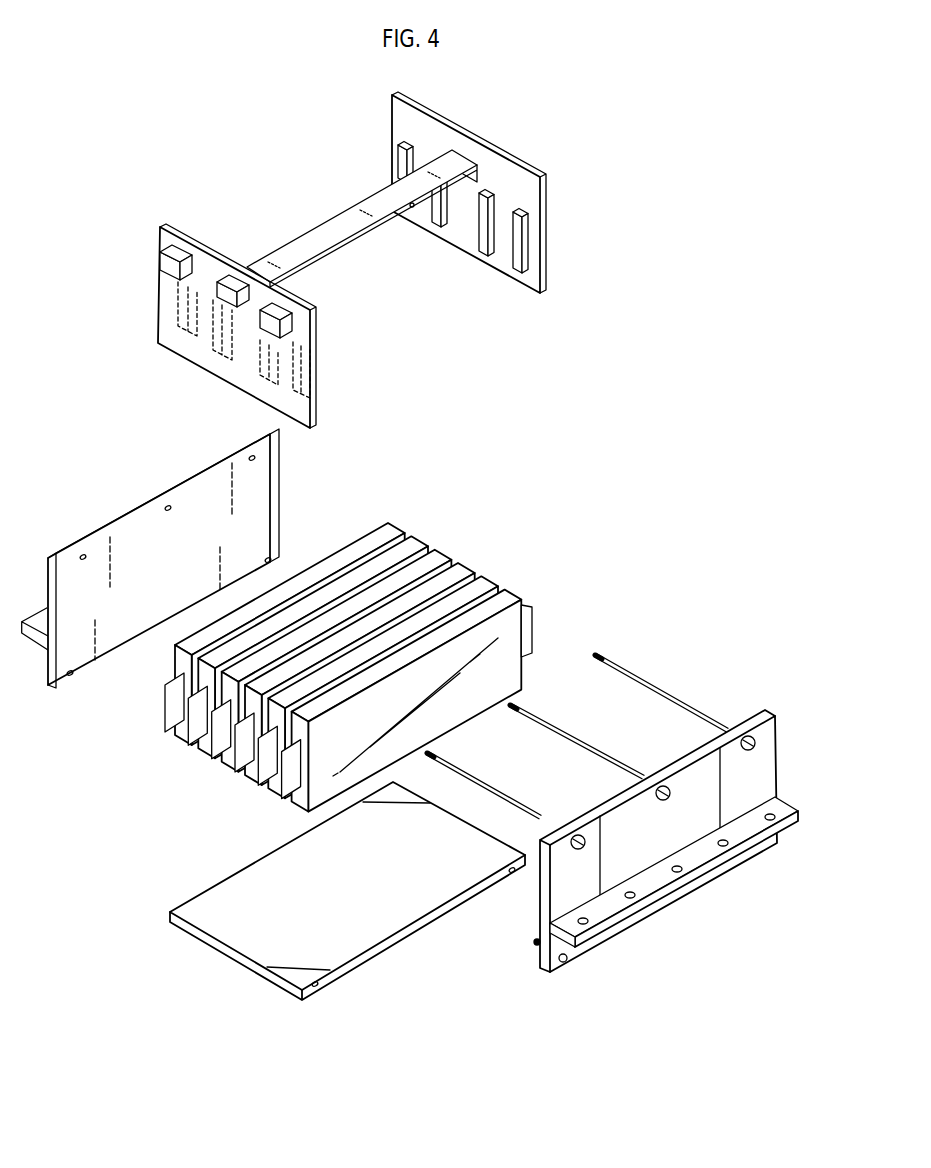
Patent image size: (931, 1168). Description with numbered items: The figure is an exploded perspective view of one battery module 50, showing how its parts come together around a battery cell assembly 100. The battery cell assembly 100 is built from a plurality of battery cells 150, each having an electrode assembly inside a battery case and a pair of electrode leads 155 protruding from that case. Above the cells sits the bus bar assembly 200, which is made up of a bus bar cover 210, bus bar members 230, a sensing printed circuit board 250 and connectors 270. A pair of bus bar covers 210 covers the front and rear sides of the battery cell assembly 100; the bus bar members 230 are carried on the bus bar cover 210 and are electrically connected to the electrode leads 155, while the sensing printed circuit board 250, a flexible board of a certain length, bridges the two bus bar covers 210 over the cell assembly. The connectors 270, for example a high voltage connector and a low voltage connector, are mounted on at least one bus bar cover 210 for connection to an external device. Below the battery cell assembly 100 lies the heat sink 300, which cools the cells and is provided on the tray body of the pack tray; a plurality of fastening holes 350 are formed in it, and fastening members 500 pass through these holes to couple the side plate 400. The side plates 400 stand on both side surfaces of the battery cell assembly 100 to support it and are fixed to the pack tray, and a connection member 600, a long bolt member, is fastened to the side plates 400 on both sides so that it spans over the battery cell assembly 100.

The battery module 50 is at (127, 175).
The battery cell assembly 100 is at (470, 525).
The battery cell 150 is at (390, 523).
The electrode lead 155 is at (167, 713).
The bus bar assembly 200 is at (565, 186).
The bus bar cover 210 is at (202, 354).
The bus bar member 230 is at (518, 262).
The sensing printed circuit board 250 is at (333, 229).
The connector 270 is at (166, 266).
The heat sink 300 is at (236, 890).
The fastening hole 350 is at (318, 988).
The side plate 400 is at (120, 503).
The fastening member 500 is at (638, 897).
The connection member 600 is at (667, 695).